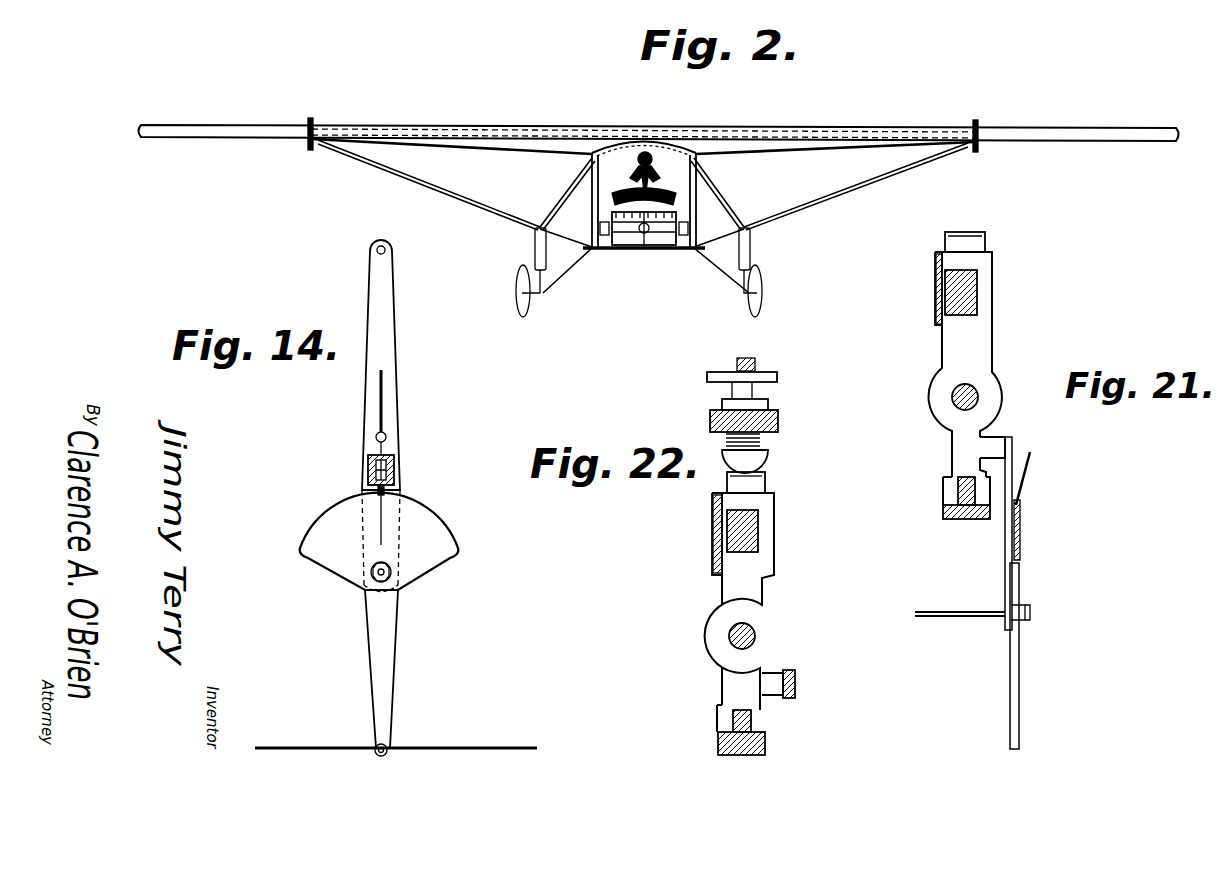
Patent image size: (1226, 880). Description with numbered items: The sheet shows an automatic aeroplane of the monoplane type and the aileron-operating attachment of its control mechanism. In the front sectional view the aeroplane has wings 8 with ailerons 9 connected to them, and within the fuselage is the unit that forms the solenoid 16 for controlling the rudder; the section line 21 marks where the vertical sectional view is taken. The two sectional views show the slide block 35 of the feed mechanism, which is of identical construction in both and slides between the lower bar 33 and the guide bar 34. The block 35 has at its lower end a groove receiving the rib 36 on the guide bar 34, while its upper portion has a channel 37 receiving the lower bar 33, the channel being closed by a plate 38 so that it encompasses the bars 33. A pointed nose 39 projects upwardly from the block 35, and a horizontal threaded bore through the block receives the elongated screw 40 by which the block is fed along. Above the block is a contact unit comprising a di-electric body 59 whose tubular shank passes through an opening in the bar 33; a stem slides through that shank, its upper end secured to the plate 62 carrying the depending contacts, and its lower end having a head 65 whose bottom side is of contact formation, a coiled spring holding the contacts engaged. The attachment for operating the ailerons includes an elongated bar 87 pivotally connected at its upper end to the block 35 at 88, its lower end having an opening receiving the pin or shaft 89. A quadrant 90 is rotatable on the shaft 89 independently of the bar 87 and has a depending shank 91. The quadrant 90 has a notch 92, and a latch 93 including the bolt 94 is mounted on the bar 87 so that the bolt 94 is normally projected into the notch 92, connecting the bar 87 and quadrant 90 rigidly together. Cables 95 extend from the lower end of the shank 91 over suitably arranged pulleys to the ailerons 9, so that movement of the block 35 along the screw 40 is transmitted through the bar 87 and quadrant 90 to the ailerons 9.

In FIG. 2, the wings 8 is at (852, 130).
In FIG. 2, the ailerons 9 is at (212, 132).
In FIG. 2, the cables 95 is at (545, 128).
In FIG. 14, the cables 95 is at (285, 747).
In FIG. 2, the solenoid 16 is at (606, 182).
In FIG. 2, the line 21— 21 is at (652, 262).
In FIG. 2, the block 35 is at (625, 256).
In FIG. 21, the block 35 is at (988, 345).
In FIG. 2, the shank 91 is at (644, 252).
In FIG. 14, the shank 91 is at (396, 672).
In FIG. 14, the elongated bar 87 is at (374, 358).
In FIG. 22, the elongated bar 87 is at (796, 688).
In FIG. 21, the elongated bar 87 is at (1012, 482).
In FIG. 14, the bolt 94 is at (388, 441).
In FIG. 14, the latch 93 is at (368, 470).
In FIG. 14, the notch 92 is at (396, 492).
In FIG. 14, the quadrant 90 is at (434, 537).
In FIG. 14, the pin or shaft 89 is at (390, 576).
In FIG. 21, the pin or shaft 89 is at (935, 612).
In FIG. 22, the plate 62 is at (777, 377).
In FIG. 22, the di-electric body 59 is at (768, 404).
In FIG. 22, the bars 33 is at (778, 420).
In FIG. 22, the head 65 is at (752, 457).
In FIG. 22, the pointed nose 39 is at (765, 478).
In FIG. 21, the pointed nose 39 is at (968, 240).
In FIG. 22, the channel 37 is at (758, 530).
In FIG. 22, the plate 38 is at (718, 558).
In FIG. 21, the plate 38 is at (975, 288).
In FIG. 22, the elongated screw 40 is at (755, 632).
In FIG. 21, the elongated screw 40 is at (978, 385).
In FIG. 22, the rib 36 is at (733, 722).
In FIG. 21, the rib 36 is at (944, 492).
In FIG. 22, the guide bar 34 is at (768, 745).
In FIG. 21, the guide bar 34 is at (966, 524).
In FIG. 21, the pivotal connection 88 is at (1010, 448).